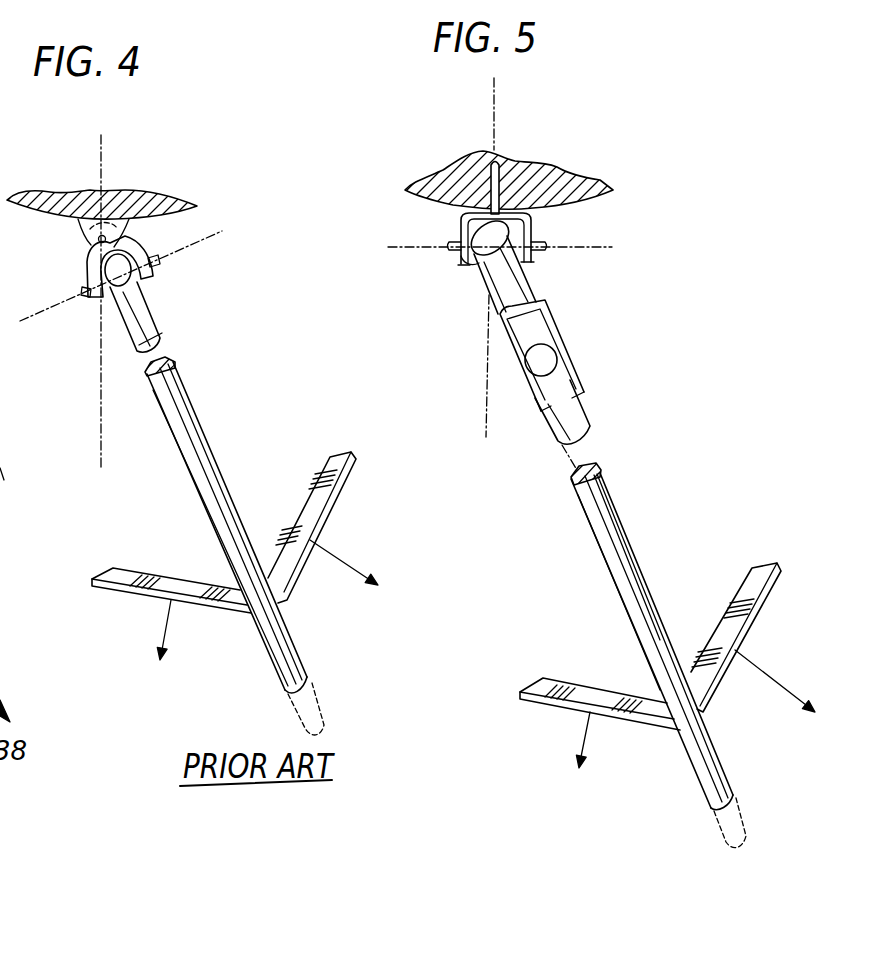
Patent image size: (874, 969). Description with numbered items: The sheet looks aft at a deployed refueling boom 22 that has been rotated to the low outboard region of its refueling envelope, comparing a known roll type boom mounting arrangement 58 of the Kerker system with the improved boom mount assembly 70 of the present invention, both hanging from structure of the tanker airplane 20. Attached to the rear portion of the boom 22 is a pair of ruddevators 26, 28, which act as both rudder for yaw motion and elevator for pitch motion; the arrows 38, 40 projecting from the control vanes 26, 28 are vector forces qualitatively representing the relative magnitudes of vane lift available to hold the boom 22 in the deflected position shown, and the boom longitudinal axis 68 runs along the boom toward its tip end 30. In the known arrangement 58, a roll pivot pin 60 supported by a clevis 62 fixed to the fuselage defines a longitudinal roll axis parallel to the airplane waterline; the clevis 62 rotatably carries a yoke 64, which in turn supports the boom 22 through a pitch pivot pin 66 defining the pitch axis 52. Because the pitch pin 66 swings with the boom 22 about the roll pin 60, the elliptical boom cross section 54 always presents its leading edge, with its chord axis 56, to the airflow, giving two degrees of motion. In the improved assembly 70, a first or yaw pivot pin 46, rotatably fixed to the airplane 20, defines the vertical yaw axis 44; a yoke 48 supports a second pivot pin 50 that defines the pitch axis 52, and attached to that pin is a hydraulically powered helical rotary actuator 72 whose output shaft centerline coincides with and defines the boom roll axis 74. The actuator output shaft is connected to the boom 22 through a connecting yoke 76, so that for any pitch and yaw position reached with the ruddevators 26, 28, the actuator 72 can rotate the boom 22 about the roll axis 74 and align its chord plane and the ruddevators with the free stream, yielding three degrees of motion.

In FIG. 4, the tanker airplane 20 is at (133, 187).
In FIG. 5, the tanker airplane 20 is at (570, 176).
In FIG. 4, the boom 22 is at (197, 415).
In FIG. 5, the boom 22 is at (584, 411).
In FIG. 4, the ruddevator 26 is at (313, 494).
In FIG. 5, the ruddevator 26 is at (766, 585).
In FIG. 4, the ruddevator 28 is at (140, 574).
In FIG. 5, the ruddevator 28 is at (582, 692).
In FIG. 4, the shaft end 30 is at (318, 708).
In FIG. 5, the shaft end 30 is at (745, 818).
In FIG. 4, the arrow 38 is at (364, 578).
In FIG. 5, the arrow 38 is at (794, 697).
In FIG. 4, the arrow 40 is at (152, 647).
In FIG. 5, the arrow 40 is at (573, 761).
In FIG. 4, the vertical or yaw axis 44 is at (103, 142).
In FIG. 5, the vertical or yaw axis 44 is at (497, 92).
In FIG. 5, the first pivot pin 46 is at (500, 162).
In FIG. 5, the yoke 48 is at (456, 222).
In FIG. 5, the second pivot pin 50 is at (545, 232).
In FIG. 4, the pitch axis 52 is at (210, 232).
In FIG. 5, the pitch axis 52 is at (405, 247).
In FIG. 4, the elliptical cross section 54 is at (140, 284).
In FIG. 5, the chord axis 56 is at (458, 264).
In FIG. 4, the roll type boom mounting arrangement 58 is at (70, 237).
In FIG. 4, the roll pivot pin 60 is at (100, 235).
In FIG. 4, the clevis 62 is at (90, 247).
In FIG. 4, the yoke 64 is at (152, 272).
In FIG. 4, the pitch pivot pin 66 is at (90, 300).
In FIG. 4, the boom longitudinal axis 68 is at (165, 333).
In FIG. 5, the boom mount assembly 70 is at (652, 197).
In FIG. 5, the rotary actuator 72 is at (530, 272).
In FIG. 5, the boom roll axis 74 is at (528, 326).
In FIG. 5, the connecting yoke 76 is at (522, 378).